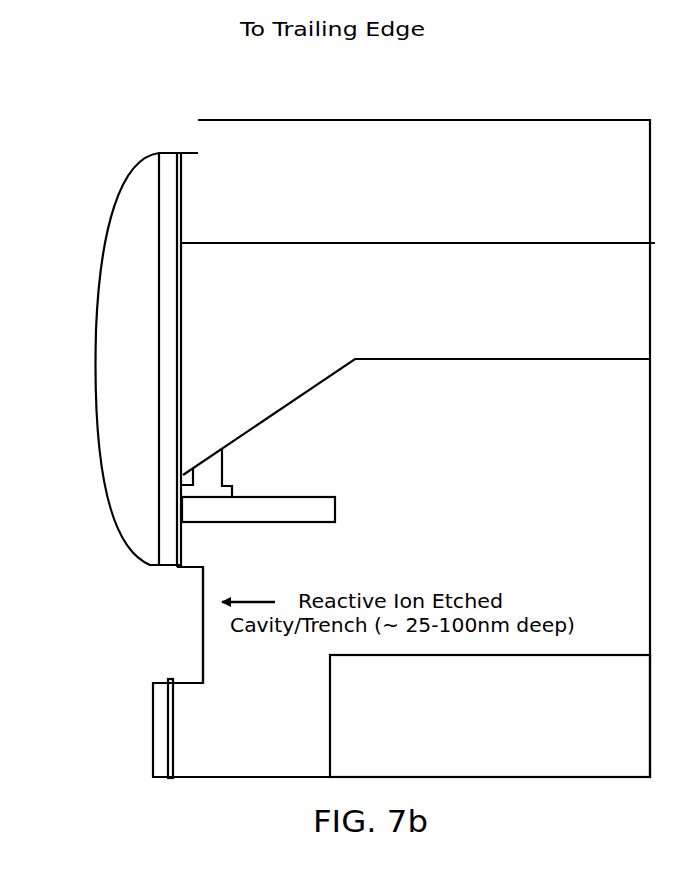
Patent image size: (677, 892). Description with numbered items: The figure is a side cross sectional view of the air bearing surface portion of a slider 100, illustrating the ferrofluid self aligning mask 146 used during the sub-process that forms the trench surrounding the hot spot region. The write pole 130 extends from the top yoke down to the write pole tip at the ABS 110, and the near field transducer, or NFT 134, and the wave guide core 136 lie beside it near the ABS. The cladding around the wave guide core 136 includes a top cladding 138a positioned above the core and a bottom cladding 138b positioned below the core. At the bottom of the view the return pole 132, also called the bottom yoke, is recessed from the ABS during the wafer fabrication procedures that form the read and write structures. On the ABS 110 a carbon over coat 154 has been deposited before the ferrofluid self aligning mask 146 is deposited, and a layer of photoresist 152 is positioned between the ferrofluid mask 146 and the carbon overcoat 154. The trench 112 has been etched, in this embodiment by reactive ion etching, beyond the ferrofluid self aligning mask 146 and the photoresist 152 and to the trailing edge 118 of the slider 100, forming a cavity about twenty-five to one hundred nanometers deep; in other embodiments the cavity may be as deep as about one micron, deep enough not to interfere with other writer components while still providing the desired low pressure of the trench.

The slider 100 is at (533, 83).
The trailing edge 118 is at (323, 88).
The carbon over coat 154 is at (176, 153).
The photoresist 152 is at (173, 152).
The trench 112 is at (187, 140).
The ferrofluid self aligning mask 146 is at (150, 210).
The write pole 130 is at (196, 298).
The ABS 110 is at (182, 402).
The NFT 134 is at (203, 490).
The wave guide core 136 is at (197, 513).
The top cladding 138a is at (416, 403).
The bottom cladding 138b is at (321, 527).
The return pole 132 is at (585, 775).